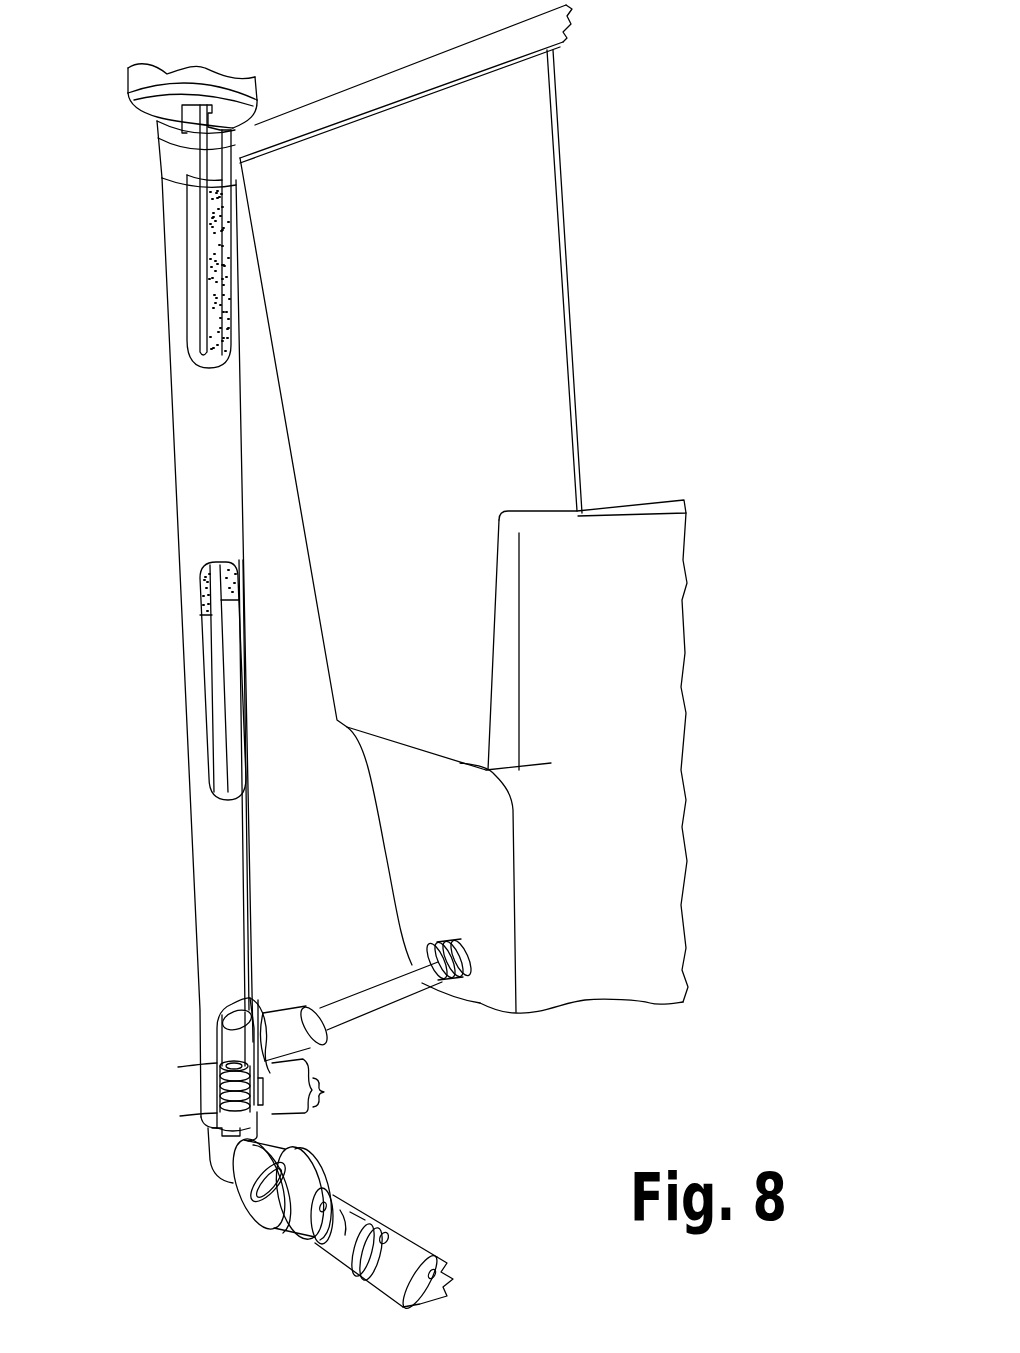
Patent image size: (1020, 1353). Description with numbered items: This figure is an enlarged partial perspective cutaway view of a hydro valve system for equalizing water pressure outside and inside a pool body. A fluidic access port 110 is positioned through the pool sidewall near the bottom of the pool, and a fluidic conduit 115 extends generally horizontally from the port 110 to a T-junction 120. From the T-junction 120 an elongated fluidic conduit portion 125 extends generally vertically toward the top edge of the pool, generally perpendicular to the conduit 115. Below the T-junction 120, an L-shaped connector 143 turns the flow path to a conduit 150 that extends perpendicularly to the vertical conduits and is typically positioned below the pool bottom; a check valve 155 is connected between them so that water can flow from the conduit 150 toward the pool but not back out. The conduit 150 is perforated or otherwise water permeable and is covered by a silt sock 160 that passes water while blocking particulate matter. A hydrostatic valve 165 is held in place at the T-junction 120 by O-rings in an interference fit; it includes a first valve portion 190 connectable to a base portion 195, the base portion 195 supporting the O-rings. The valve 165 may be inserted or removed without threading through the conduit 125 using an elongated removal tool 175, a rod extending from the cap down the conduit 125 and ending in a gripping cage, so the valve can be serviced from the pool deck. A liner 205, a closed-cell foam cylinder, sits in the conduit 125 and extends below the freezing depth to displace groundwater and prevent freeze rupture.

The fluidic access port 110 is at (440, 947).
The fluidic conduit 115 is at (380, 995).
The T-junction 120 is at (203, 1050).
The elongated fluidic conduit portion 125 is at (188, 466).
The L-shaped connector 143 is at (207, 1140).
The conduit 150 is at (397, 1253).
The check valve 155 is at (262, 1207).
The silt sock 160 is at (330, 1247).
The hydrostatic valve 165 is at (269, 1087).
The removal tool 175 is at (218, 658).
The first valve portion 190 is at (222, 1068).
The base portion 195 is at (222, 1110).
The liner 205 is at (208, 248).